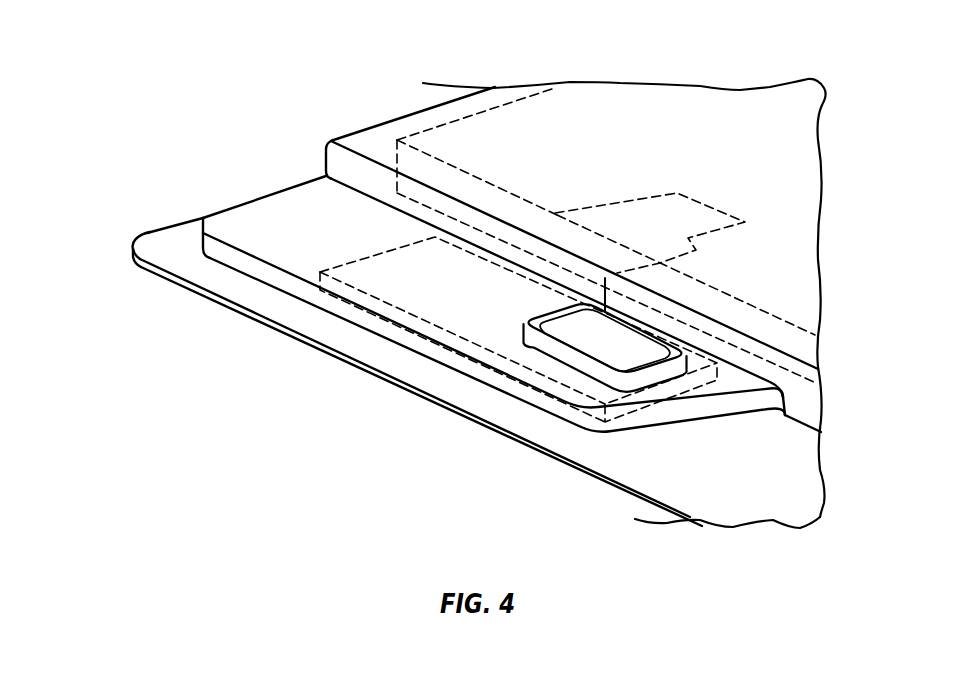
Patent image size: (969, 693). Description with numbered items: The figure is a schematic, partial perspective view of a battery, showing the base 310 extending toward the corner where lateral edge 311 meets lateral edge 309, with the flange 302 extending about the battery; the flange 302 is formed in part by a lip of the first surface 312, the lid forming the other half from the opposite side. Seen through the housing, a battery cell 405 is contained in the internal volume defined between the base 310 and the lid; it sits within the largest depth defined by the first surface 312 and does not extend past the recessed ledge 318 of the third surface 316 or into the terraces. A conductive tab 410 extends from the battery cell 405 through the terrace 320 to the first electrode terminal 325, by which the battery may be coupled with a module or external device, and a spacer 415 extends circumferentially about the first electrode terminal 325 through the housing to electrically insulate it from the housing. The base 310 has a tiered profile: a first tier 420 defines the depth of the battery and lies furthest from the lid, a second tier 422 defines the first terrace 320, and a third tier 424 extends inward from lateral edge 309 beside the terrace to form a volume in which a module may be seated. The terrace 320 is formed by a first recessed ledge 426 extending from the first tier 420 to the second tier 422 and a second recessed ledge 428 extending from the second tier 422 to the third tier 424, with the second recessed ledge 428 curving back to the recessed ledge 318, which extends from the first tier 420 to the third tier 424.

The flange 302 is at (130, 250).
The lateral edge 309 is at (308, 345).
The base 310 is at (527, 97).
The lateral edge 311 is at (167, 230).
The first surface 312 is at (503, 103).
The third surface 316 is at (820, 422).
The recessed ledge 318 is at (815, 393).
The first terrace 320 is at (232, 217).
The first electrode terminal 325 is at (557, 348).
The battery cell 405 is at (737, 105).
The conductive tab 410 is at (593, 228).
The spacer 415 is at (594, 392).
The first tier 420 is at (440, 120).
The second tier 422 is at (285, 200).
The third tier 424 is at (798, 480).
The first recessed ledge 426 is at (324, 162).
The second recessed ledge 428 is at (270, 273).